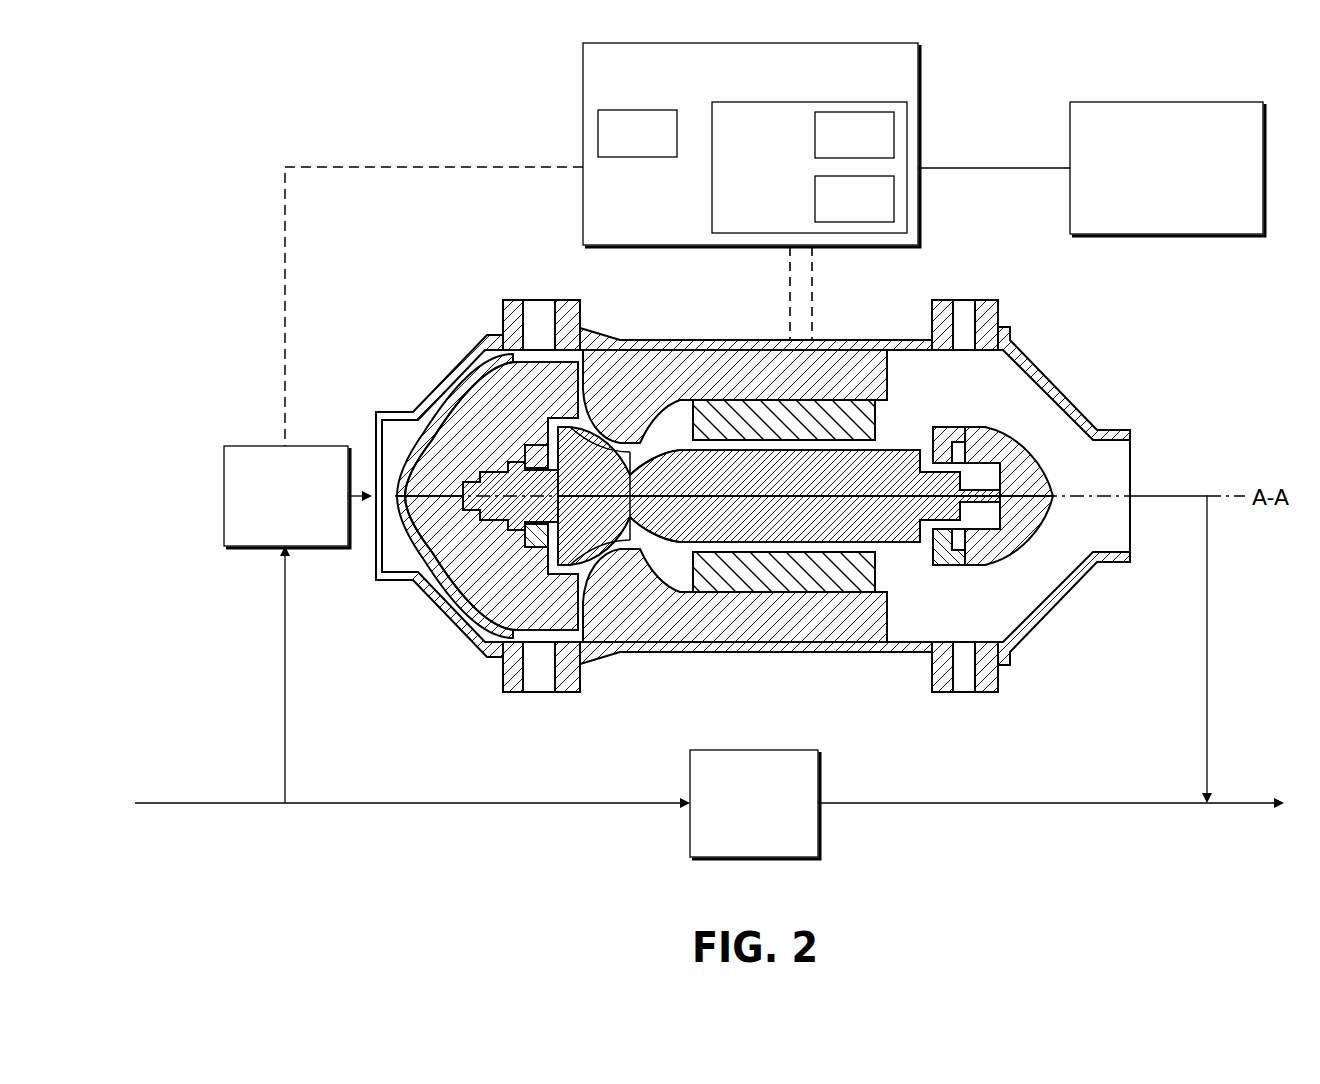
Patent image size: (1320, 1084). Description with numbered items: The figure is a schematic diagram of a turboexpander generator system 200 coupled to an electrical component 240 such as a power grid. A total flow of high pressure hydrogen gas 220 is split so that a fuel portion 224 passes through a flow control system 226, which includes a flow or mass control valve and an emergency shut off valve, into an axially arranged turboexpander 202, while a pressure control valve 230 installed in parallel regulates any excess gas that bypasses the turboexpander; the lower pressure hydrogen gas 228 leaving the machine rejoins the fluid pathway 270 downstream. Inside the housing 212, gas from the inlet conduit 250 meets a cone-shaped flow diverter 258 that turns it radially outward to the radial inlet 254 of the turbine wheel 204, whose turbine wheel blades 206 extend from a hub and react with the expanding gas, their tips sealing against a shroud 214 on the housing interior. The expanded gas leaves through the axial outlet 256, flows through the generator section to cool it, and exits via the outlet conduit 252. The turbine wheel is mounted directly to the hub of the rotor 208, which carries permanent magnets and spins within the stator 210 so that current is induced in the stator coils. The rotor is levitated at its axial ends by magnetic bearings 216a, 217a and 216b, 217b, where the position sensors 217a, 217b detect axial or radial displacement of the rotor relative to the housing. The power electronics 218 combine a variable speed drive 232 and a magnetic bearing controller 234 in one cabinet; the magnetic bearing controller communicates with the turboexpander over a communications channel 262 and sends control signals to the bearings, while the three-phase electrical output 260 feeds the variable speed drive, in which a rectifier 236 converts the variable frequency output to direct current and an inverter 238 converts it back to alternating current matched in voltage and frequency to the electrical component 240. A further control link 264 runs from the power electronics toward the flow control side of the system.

The turboexpander generator system 200 is at (172, 142).
The turboexpander 202 is at (418, 342).
The turbine wheel 204 is at (565, 557).
The turbine wheel blades 206 is at (616, 548).
The rotor 208 is at (888, 536).
The stator 210 is at (809, 433).
The housing 212 is at (838, 650).
The shroud 214 is at (603, 552).
The magnetic bearing 216a is at (530, 545).
The position sensor 217a is at (545, 550).
The magnetic bearing 216b is at (940, 453).
The position sensor 217b is at (960, 452).
The power electronics 218 is at (809, 89).
The high pressure hydrogen gas 220 is at (212, 805).
The fuel portion 224 is at (284, 648).
The flow control system 226 is at (310, 540).
The lower pressure hydrogen gas 228 is at (1206, 648).
The pressure control valve 230 is at (779, 852).
The variable speed drive 232 is at (774, 152).
The magnetic bearing controller 234 is at (662, 152).
The rectifier 236 is at (880, 217).
The inverter 238 is at (880, 152).
The electrical component 240 is at (1069, 118).
The inlet conduit 250 is at (375, 438).
The outlet conduit 252 is at (1132, 470).
The radial inlet 254 is at (590, 392).
The axial outlet 256 is at (638, 458).
The flow diverter 258 is at (505, 378).
The electrical output 260 is at (813, 297).
The communications channel 262 is at (789, 297).
The control signal line 264 is at (424, 166).
The fluid pathway 270 is at (1030, 805).